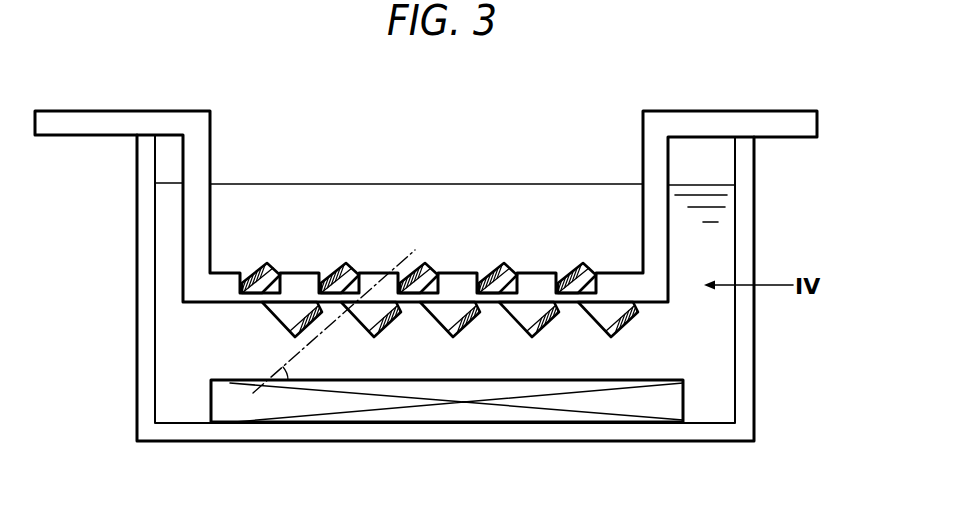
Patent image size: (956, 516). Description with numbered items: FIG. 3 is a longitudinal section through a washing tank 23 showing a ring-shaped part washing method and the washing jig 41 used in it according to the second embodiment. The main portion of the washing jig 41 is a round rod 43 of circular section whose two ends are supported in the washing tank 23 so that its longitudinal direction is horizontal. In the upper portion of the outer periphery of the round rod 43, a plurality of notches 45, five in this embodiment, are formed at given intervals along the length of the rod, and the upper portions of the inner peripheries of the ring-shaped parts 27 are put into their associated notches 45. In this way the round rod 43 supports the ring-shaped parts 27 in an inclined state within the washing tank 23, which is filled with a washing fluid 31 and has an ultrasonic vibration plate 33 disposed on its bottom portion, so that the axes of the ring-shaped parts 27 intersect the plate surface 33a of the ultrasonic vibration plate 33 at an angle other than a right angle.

The washing tank 23 is at (748, 240).
The ring-shaped part 27 is at (353, 250).
The washing fluid 31 is at (727, 198).
The ultrasonic vibration plate 33 is at (510, 436).
The plate surface 33a is at (582, 370).
The washing jig 41 is at (431, 210).
The round rod 43 is at (226, 272).
The notch 45 is at (337, 263).